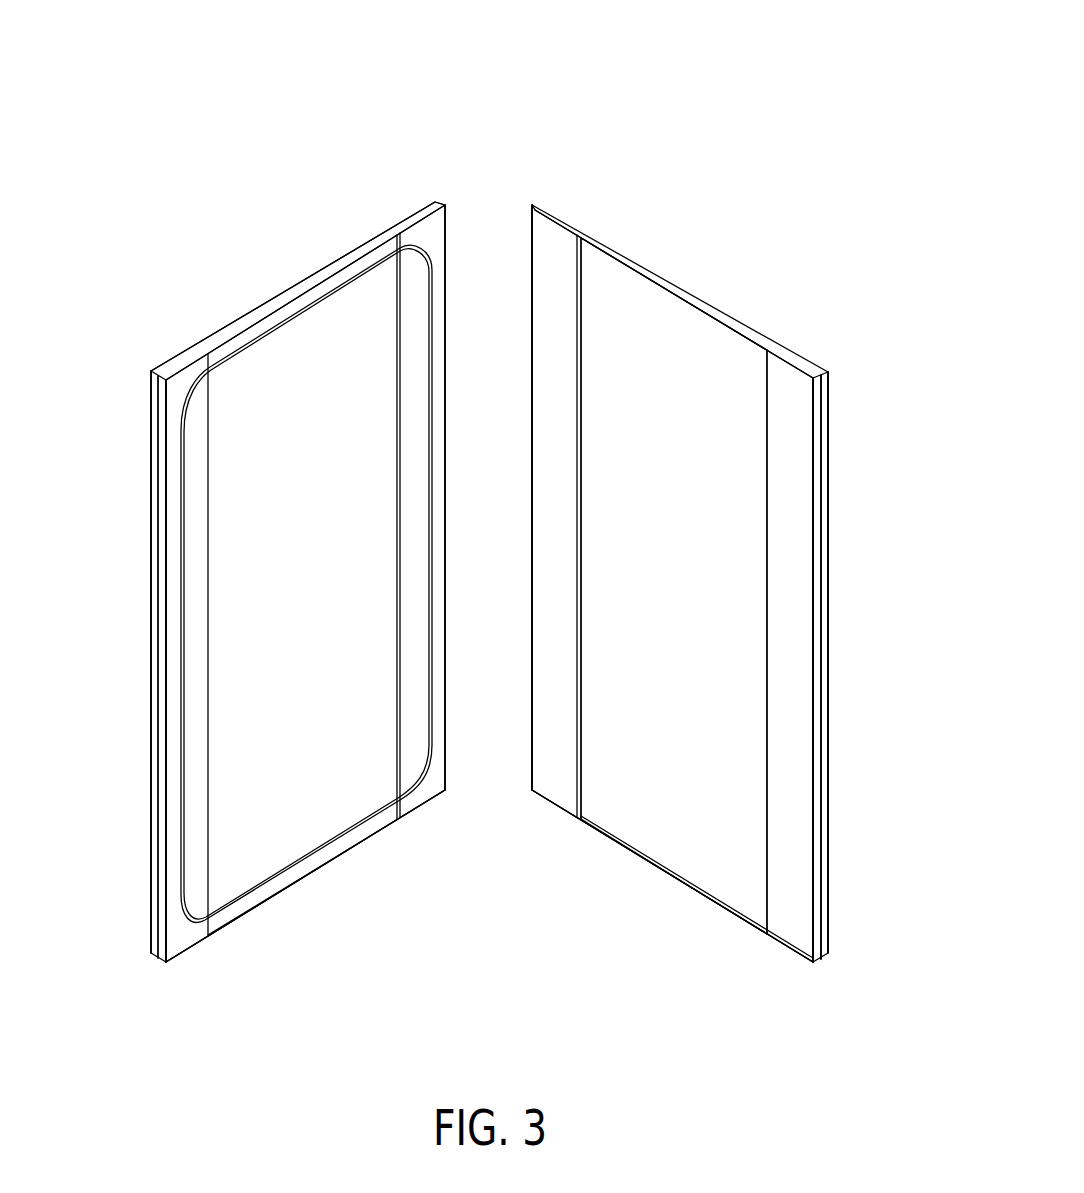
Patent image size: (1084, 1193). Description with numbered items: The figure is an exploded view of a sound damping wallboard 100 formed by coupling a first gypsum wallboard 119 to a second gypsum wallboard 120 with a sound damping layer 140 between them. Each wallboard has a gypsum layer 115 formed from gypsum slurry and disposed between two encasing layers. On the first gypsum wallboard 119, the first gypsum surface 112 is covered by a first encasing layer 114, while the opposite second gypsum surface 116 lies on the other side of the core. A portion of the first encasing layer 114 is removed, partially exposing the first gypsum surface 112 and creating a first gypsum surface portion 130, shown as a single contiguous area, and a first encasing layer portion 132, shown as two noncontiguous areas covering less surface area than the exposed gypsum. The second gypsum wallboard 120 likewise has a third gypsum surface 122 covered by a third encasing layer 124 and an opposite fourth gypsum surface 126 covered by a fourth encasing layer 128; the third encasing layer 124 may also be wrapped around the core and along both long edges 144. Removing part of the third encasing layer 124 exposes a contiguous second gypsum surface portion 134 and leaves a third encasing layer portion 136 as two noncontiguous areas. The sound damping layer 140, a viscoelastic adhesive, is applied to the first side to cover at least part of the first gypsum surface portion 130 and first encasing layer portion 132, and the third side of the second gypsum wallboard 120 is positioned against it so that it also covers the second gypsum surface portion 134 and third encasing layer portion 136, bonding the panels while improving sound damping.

The sound damping wallboard 100 is at (489, 92).
The first gypsum wallboard 119 is at (226, 251).
The second gypsum wallboard 120 is at (732, 216).
The first gypsum surface 112 is at (229, 345).
The first encasing layer 114 is at (433, 198).
The gypsum layer 115 is at (150, 515).
The second gypsum surface 116 is at (172, 607).
The sound damping layer 140 is at (200, 415).
The first gypsum surface portion 130 is at (318, 300).
The first encasing layer portion 132 is at (432, 792).
The third gypsum surface 122 is at (742, 340).
The third encasing layer 124 is at (555, 250).
The fourth encasing layer 128 is at (818, 358).
The fourth gypsum surface 126 is at (795, 480).
The second gypsum surface portion 134 is at (665, 340).
The third encasing layer portion 136 is at (550, 790).
The long edges 144 is at (146, 770).